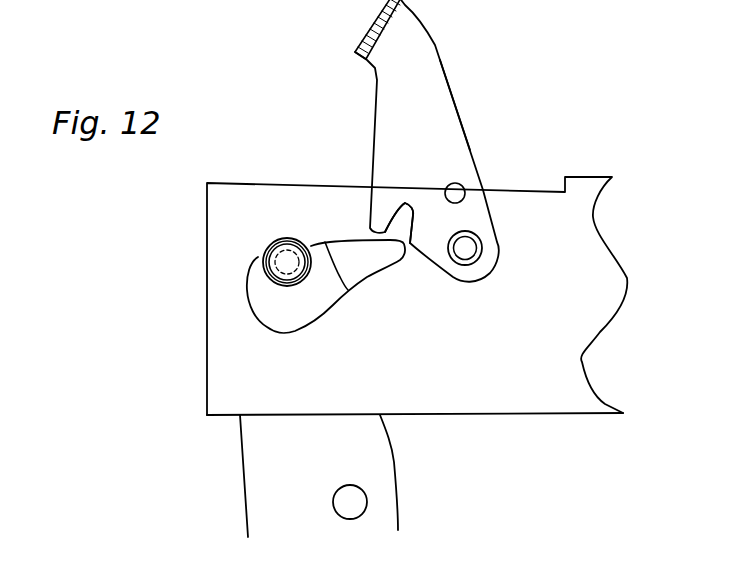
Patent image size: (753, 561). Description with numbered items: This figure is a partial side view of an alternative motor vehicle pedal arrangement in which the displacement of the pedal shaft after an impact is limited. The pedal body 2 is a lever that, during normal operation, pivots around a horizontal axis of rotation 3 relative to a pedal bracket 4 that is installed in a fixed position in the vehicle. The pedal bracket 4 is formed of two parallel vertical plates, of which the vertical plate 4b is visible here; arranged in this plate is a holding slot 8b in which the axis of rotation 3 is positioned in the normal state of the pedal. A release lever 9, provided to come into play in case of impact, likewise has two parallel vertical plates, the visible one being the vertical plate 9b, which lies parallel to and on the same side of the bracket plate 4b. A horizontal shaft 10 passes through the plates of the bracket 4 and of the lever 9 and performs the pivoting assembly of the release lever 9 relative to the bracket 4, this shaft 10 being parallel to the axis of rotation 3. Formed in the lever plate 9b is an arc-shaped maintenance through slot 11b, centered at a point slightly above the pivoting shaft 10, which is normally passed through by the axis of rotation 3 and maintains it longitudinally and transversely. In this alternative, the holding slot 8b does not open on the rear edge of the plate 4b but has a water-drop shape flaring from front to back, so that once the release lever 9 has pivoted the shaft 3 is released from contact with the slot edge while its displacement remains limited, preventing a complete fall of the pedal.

The pedal body 2 is at (255, 505).
The axis of rotation 3 is at (282, 253).
The pedal bracket 4 is at (195, 375).
The vertical plate 4b is at (468, 395).
The holding slot 8b is at (260, 300).
The release lever 9 is at (440, 32).
The vertical plate 9b is at (433, 98).
The horizontal shaft 10 is at (467, 248).
The maintenance through slot 11b is at (398, 218).